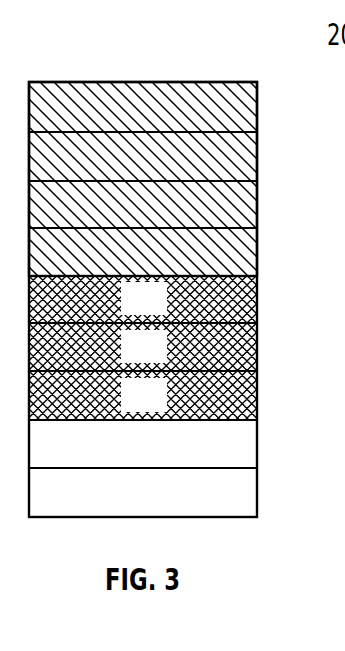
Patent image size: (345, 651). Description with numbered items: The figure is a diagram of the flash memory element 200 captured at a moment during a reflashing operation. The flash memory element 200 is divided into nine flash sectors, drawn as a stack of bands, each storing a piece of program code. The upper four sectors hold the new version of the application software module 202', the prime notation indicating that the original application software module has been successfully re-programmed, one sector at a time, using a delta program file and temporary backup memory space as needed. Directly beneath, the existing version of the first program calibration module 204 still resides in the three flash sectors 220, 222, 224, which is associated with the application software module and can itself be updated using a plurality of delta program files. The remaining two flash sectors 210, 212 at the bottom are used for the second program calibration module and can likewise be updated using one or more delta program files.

The flash memory element 200 is at (174, 267).
The new version of the application software module 202' is at (183, 179).
The first program calibration module 204 is at (179, 348).
The flash sector 220 is at (163, 311).
The flash sector 222 is at (163, 361).
The flash sector 224 is at (163, 409).
The flash sector 210 is at (163, 457).
The flash sector 212 is at (163, 505).